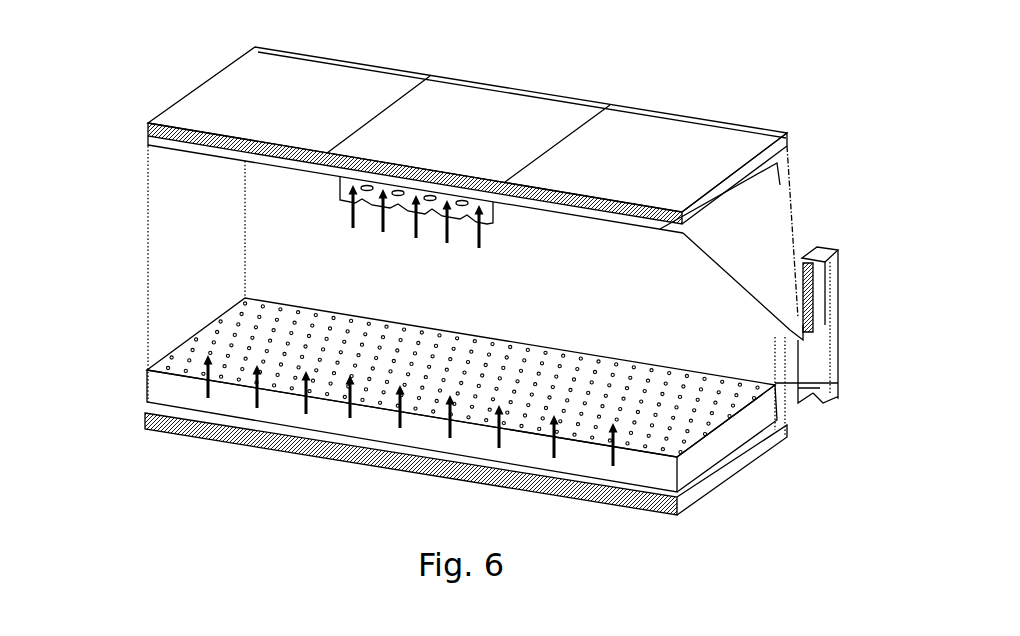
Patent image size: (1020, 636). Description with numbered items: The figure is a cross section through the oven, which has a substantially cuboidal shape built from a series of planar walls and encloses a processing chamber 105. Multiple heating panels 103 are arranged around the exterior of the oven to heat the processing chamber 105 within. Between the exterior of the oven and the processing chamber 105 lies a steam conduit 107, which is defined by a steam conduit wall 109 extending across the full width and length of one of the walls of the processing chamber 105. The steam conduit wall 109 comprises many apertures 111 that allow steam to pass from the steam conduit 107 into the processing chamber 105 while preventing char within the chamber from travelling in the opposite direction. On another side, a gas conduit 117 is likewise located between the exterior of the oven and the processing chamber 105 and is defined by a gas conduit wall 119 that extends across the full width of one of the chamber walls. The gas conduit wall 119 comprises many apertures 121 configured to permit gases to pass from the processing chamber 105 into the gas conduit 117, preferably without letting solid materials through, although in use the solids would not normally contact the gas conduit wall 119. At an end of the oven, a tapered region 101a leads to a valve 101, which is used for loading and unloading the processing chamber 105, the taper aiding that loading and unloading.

The valve 101 is at (828, 402).
The tapered region 101a is at (770, 230).
The heating panel 103 is at (172, 108).
The processing chamber 105 is at (145, 298).
The steam conduit 107 is at (290, 413).
The steam conduit wall 109 is at (660, 430).
The apertures 111 is at (567, 430).
The gas conduit 117 is at (408, 197).
The gas conduit wall 119 is at (467, 217).
The apertures 121 is at (365, 185).